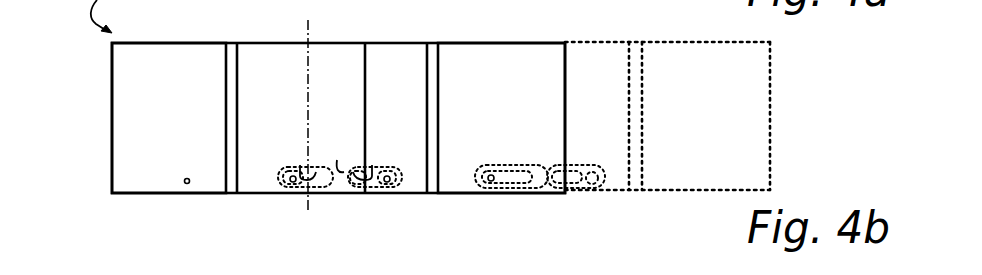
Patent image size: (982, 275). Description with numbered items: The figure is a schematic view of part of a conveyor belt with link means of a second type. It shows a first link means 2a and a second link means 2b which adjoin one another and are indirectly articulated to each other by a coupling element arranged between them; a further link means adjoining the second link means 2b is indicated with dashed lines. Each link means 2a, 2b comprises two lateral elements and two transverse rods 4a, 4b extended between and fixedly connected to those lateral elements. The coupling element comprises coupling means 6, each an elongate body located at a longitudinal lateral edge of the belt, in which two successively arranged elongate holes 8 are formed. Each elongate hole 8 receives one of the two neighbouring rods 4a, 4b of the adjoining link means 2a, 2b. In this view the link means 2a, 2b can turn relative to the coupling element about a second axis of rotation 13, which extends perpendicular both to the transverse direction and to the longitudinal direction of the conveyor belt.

The first link means 2a is at (175, 60).
The second link means 2b is at (467, 57).
The second axis of rotation 13 is at (308, 33).
The elongate hole 8 is at (300, 165).
The coupling means 6 is at (337, 160).
The transverse rod 4a is at (290, 186).
The transverse rod 4b is at (391, 186).